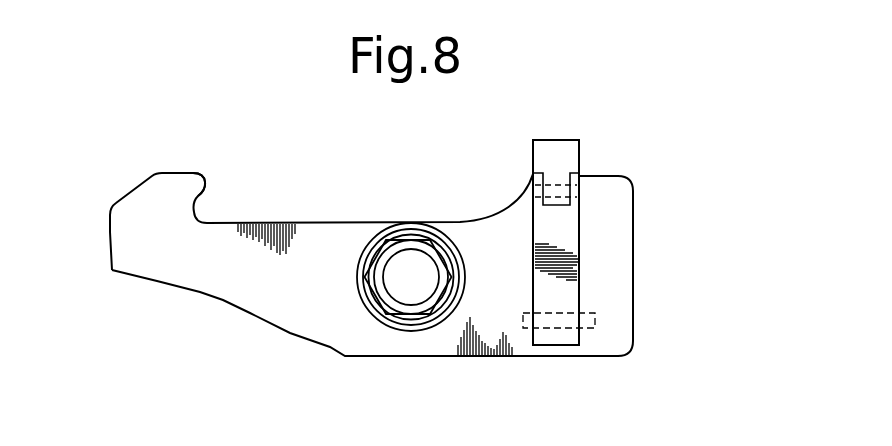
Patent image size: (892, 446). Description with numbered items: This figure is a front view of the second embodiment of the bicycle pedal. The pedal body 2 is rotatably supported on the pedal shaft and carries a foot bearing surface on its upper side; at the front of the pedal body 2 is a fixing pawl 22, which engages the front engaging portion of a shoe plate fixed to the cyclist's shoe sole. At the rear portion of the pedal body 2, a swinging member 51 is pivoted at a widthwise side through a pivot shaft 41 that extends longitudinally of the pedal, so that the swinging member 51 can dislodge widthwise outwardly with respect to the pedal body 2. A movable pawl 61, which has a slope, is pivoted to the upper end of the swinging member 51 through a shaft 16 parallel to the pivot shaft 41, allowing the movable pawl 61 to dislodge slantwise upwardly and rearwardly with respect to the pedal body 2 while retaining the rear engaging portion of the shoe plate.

The pedal body 2 is at (320, 218).
The fixing pawl 22 is at (195, 180).
The movable pawl 61 is at (560, 150).
The shaft 16 is at (579, 192).
The swinging member 51 is at (579, 262).
The pivot shaft 41 is at (595, 326).